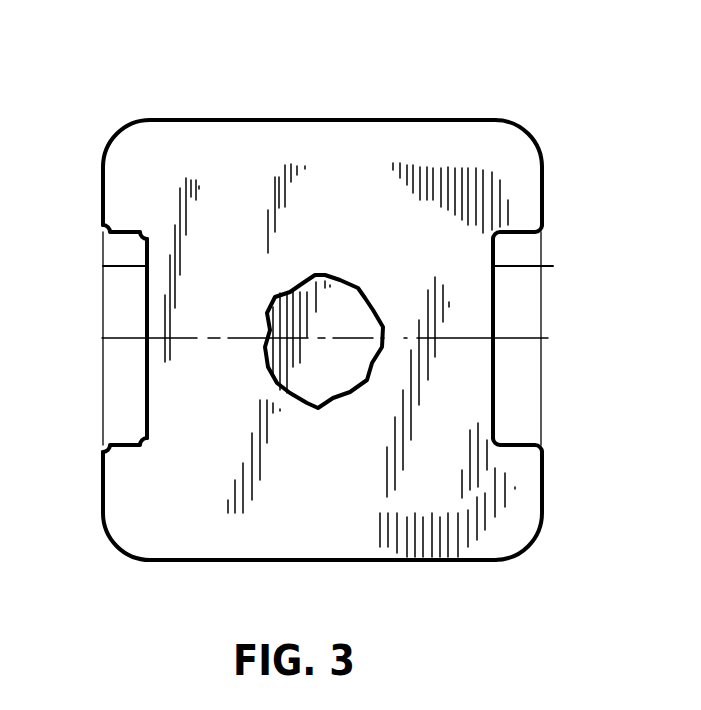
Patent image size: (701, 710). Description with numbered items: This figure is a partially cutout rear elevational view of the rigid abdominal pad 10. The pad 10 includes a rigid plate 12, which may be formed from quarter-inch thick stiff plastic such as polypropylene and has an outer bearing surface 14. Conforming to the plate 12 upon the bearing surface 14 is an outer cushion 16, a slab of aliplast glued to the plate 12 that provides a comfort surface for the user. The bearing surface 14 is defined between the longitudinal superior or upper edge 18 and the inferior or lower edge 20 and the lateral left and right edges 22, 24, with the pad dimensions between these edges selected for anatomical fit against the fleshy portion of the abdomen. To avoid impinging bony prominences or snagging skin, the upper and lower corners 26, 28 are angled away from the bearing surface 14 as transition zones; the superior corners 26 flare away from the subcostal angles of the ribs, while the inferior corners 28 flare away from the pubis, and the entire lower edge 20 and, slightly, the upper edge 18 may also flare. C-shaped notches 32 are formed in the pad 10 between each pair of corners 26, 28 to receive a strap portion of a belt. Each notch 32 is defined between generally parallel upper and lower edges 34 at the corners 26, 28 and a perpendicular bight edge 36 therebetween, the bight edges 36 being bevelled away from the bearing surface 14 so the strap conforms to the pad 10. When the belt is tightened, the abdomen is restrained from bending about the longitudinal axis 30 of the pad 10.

The rigid abdominal pad 10 is at (527, 76).
The rigid plate 12 is at (356, 311).
The outer bearing surface 14 is at (328, 383).
The outer cushion 16 is at (307, 495).
The upper edge 18 is at (384, 119).
The lower edge 20 is at (362, 562).
The left edge 22 is at (543, 303).
The right edge 24 is at (103, 313).
The upper corners 26 is at (102, 158).
The lower corners 28 is at (112, 512).
The longitudinal axis 30 is at (185, 337).
The C-shaped notches 32 is at (118, 369).
The upper and lower edges of notch 34 is at (118, 232).
The bight edges 36 is at (103, 266).